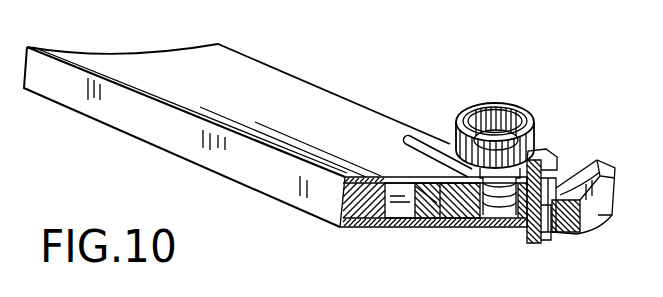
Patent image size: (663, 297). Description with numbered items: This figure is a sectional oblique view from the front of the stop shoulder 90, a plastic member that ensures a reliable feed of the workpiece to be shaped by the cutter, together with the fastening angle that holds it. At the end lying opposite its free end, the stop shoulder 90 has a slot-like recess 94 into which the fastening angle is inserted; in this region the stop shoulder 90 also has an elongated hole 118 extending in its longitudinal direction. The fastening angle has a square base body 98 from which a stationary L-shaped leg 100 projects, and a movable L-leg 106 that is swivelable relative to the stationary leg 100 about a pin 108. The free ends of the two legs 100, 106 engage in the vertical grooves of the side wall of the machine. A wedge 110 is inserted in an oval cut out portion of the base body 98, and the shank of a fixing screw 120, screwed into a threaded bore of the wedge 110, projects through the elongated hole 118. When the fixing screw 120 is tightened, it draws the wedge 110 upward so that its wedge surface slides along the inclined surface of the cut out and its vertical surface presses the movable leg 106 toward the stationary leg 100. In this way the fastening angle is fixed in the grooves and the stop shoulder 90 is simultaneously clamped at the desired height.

The stop shoulder 90 is at (143, 126).
The slot-like recess 94 is at (410, 200).
The square base body 98 is at (455, 208).
The L-shaped leg 100 is at (600, 203).
The movable L-leg 106 is at (543, 153).
The pin 108 is at (545, 234).
The wedge 110 is at (487, 210).
The elongated hole 118 is at (443, 138).
The fixing screw 120 is at (503, 110).